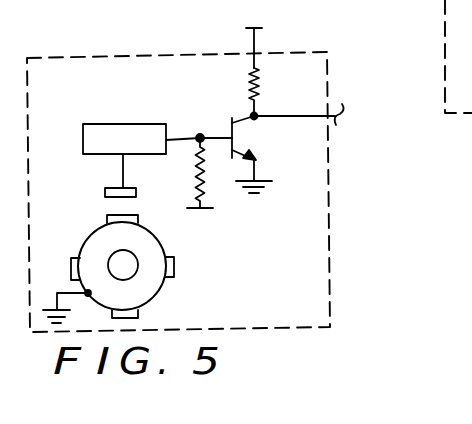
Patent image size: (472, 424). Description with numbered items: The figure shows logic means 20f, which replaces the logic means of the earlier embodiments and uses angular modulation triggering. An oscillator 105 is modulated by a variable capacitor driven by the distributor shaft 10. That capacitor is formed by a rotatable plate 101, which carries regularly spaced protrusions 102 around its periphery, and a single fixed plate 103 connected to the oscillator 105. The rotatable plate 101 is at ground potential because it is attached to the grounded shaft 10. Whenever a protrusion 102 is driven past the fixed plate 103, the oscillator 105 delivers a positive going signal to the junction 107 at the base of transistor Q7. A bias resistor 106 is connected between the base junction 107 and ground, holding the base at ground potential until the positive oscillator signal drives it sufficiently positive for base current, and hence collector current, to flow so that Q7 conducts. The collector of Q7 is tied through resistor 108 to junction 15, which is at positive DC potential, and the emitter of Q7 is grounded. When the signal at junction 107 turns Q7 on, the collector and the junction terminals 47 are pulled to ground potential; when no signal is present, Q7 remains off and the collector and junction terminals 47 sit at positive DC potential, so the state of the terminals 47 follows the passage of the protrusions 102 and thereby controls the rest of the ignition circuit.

The logic means 20f is at (332, 218).
The junction 15 is at (263, 36).
The junction terminals 47 is at (332, 115).
The resistor 108 is at (261, 80).
The junction 107 is at (201, 134).
The bias resistor 106 is at (200, 172).
The oscillator 105 is at (124, 140).
The fixed plate 103 is at (105, 193).
The protrusions 102 is at (107, 219).
The distributor shaft 10 is at (124, 258).
The rotatable plate 101 is at (140, 291).
The transistor Q7 is at (252, 153).